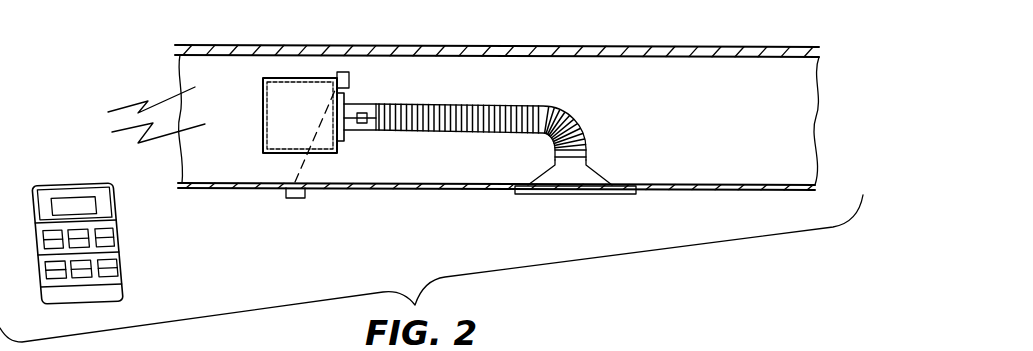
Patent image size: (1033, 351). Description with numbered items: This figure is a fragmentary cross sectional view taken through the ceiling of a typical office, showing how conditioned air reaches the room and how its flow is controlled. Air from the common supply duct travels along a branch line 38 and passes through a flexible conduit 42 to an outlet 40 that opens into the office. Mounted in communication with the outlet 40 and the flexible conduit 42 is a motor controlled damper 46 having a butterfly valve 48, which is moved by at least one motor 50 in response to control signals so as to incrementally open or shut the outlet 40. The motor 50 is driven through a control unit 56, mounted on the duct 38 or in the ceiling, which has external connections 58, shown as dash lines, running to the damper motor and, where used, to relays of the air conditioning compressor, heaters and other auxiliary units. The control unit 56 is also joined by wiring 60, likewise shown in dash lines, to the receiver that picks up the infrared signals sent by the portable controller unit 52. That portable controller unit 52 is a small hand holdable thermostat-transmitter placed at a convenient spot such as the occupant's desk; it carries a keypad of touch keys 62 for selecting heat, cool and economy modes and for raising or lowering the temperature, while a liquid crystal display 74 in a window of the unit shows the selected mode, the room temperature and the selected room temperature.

The branch line 38 is at (264, 104).
The outlet 40 is at (590, 175).
The flexible conduit 42 is at (497, 105).
The motor controlled damper 46 is at (347, 100).
The butterfly valve 48 is at (351, 120).
The motor 50 is at (363, 120).
The portable controller unit 52 is at (90, 222).
The control unit 56 is at (338, 72).
The external connections 58 is at (358, 103).
The wiring 60 is at (317, 128).
The touch keys 62 is at (120, 267).
The liquid crystal display 74 is at (55, 197).